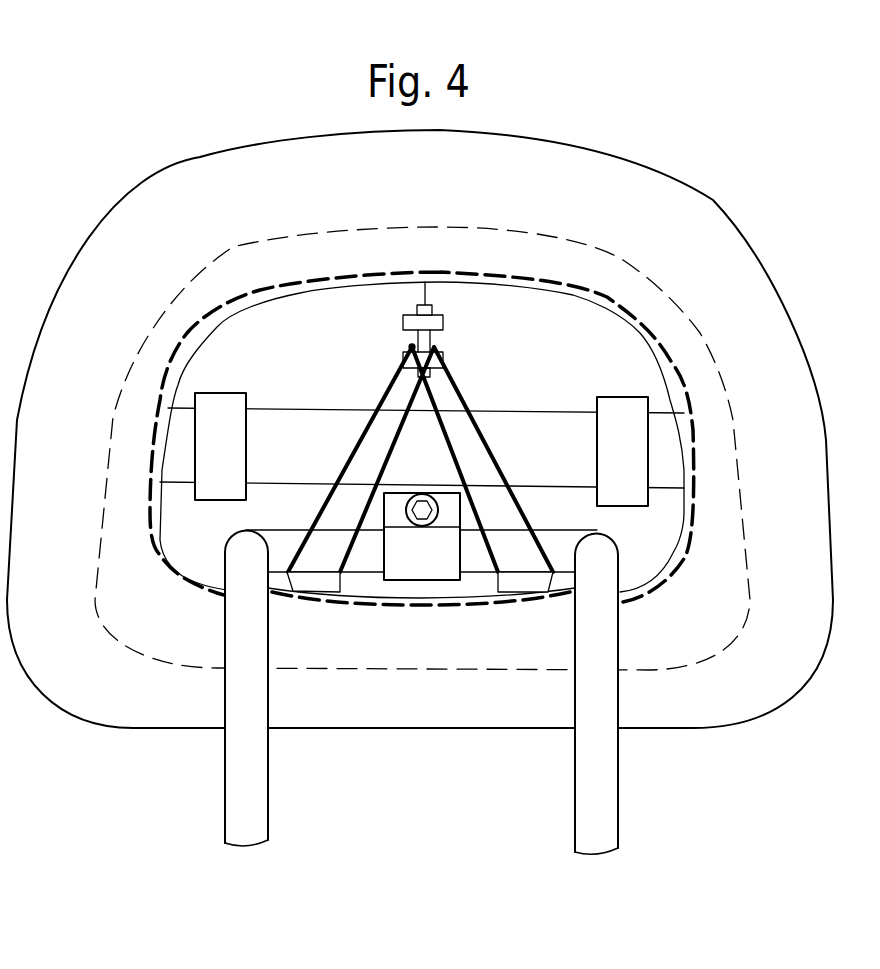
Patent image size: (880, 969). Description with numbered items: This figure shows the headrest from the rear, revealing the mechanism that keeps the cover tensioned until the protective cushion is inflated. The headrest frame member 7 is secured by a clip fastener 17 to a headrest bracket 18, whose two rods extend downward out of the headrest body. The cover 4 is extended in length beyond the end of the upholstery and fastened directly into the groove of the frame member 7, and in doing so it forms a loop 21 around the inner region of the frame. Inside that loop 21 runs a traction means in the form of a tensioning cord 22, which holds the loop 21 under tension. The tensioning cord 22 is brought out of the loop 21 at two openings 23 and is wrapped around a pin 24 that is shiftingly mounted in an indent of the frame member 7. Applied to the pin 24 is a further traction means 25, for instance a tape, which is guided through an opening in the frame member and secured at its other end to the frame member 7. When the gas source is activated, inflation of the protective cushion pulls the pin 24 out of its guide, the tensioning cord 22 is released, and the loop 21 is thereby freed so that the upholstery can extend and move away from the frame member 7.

The cover 4 is at (647, 163).
The frame member 7 is at (748, 502).
The clip fastener 17 is at (433, 562).
The headrest bracket 18 is at (595, 797).
The loop 21 is at (630, 310).
The tensioning cord 22 is at (462, 398).
The openings 23 is at (322, 597).
The pin 24 is at (432, 309).
The traction means 25 is at (418, 305).